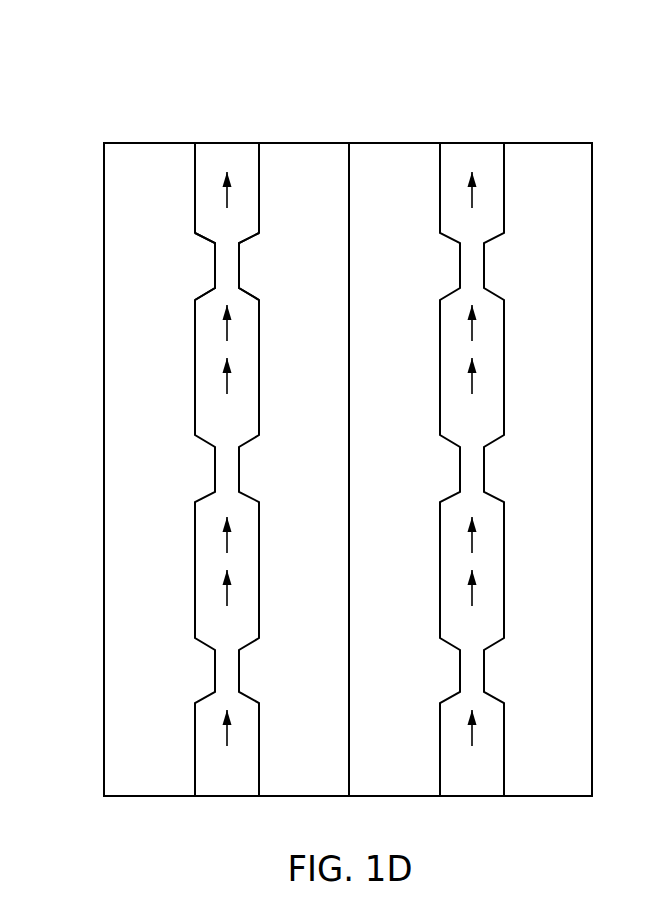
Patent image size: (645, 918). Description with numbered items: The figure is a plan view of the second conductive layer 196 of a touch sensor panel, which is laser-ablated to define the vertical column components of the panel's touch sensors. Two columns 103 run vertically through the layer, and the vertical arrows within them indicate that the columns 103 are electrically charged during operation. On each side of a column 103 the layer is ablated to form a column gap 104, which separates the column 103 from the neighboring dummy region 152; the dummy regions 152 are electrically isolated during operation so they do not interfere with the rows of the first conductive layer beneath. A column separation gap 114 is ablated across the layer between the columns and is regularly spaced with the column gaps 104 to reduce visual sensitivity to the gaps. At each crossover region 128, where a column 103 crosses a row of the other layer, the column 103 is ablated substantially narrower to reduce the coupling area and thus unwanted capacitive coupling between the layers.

The second conductive layer 196 is at (130, 137).
The column gap 104 is at (259, 165).
The column separation gap 114 is at (350, 158).
The crossover region 128 is at (188, 261).
The dummy region 152 is at (122, 350).
The column 103 is at (228, 778).